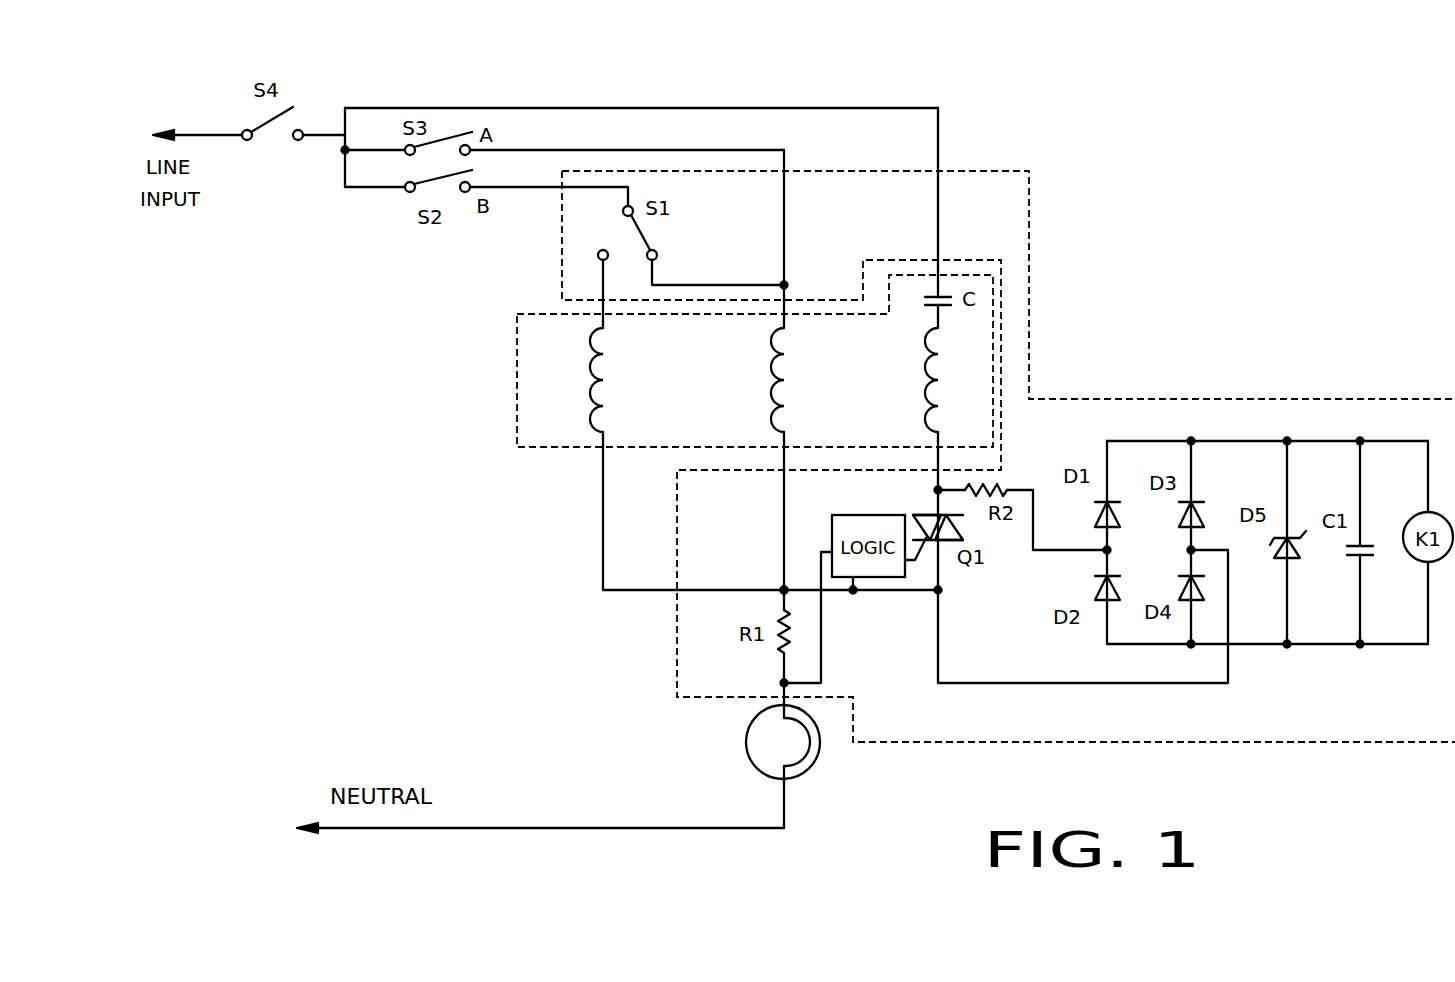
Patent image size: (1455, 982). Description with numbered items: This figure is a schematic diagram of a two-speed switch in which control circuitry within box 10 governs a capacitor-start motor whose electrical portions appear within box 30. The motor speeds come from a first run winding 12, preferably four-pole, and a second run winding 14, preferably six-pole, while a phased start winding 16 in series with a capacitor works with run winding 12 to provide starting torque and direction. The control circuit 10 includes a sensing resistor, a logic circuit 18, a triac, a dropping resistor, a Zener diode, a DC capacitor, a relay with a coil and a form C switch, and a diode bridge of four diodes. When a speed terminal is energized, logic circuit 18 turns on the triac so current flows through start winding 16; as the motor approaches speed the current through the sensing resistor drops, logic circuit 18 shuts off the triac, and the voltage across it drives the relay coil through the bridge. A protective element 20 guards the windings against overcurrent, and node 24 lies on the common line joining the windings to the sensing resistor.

The control circuitry 10 is at (1045, 310).
The first run winding 12 is at (752, 380).
The second run winding 14 is at (574, 380).
The start winding 16 is at (912, 380).
The logic circuit 18 is at (877, 585).
The protective element 20 is at (746, 738).
The junction node 24 is at (784, 588).
The motor 30 is at (517, 363).